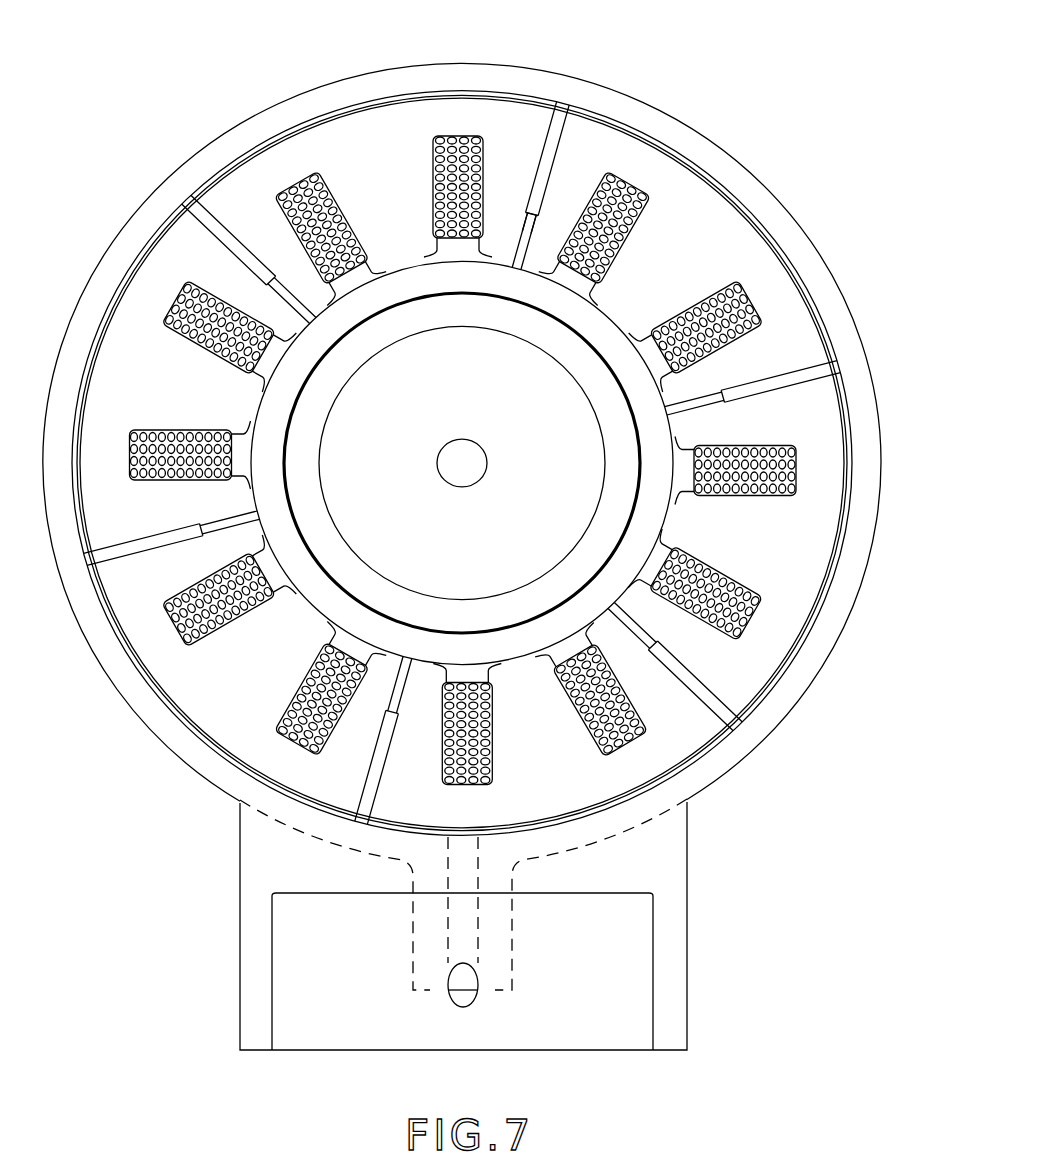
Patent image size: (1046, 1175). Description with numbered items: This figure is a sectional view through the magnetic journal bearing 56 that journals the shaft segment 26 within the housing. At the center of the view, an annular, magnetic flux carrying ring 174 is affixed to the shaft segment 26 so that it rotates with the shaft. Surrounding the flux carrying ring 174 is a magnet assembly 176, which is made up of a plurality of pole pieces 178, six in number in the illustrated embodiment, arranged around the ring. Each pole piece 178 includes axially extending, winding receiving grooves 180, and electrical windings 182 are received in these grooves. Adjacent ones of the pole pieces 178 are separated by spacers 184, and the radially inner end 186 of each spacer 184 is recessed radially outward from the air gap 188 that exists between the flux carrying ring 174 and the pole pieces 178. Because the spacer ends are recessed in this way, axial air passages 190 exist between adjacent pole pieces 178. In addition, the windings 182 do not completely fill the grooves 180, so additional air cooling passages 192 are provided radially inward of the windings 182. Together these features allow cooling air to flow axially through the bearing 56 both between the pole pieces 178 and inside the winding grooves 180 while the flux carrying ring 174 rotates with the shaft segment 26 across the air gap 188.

The shaft segment 26 is at (595, 383).
The magnetic journal bearing 56 is at (812, 182).
The flux carrying ring 174 is at (703, 388).
The magnet assembly 176 is at (680, 146).
The pole pieces 178 is at (333, 124).
The winding receiving grooves 180 is at (442, 188).
The electrical windings 182 is at (472, 138).
The spacers 184 is at (550, 140).
The radially inner end 186 is at (533, 230).
The air gap 188 is at (257, 413).
The axial air passages 190 is at (533, 258).
The air cooling passages 192 is at (607, 300).